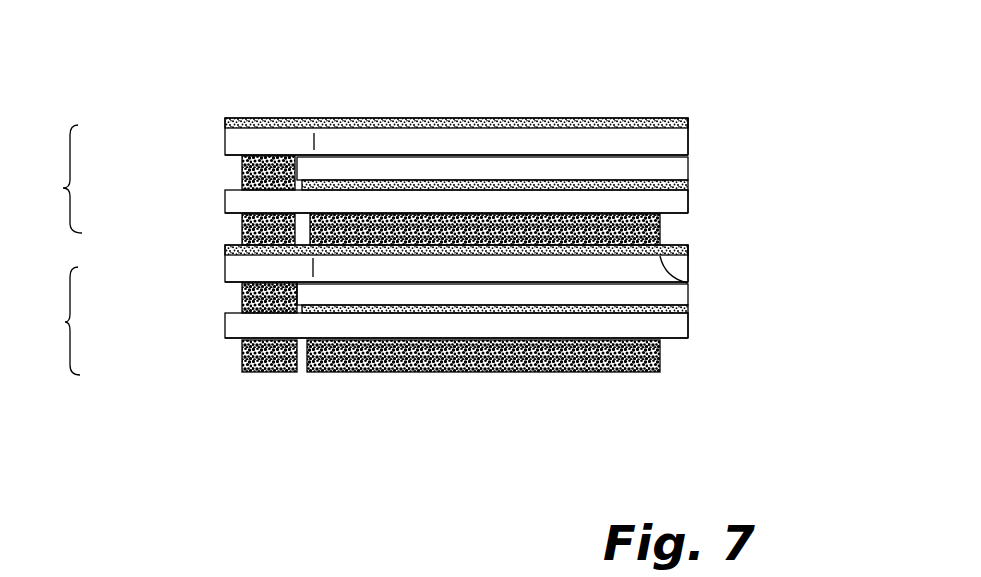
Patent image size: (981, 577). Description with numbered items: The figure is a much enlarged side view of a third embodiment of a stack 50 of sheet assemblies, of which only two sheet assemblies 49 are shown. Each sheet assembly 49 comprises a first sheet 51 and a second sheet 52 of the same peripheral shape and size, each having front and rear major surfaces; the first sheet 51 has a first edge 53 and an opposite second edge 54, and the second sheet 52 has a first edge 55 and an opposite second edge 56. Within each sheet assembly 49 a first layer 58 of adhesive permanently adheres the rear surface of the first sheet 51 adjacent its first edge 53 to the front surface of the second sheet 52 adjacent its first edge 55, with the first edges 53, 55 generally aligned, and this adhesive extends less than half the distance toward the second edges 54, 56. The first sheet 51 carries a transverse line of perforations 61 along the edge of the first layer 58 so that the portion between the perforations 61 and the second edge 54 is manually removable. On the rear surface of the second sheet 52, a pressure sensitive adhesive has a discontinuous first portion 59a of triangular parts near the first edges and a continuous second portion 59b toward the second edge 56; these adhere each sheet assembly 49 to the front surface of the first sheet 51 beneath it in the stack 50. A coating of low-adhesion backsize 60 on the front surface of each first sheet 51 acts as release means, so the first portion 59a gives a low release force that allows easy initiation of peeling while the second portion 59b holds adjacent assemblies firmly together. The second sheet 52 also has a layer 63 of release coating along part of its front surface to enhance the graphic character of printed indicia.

The sheet assembly 49 is at (51, 250).
The stack of sheet assemblies 50 is at (486, 227).
The first sheet 51 is at (556, 112).
The second sheet 52 is at (552, 272).
The first edge of first sheet 53 is at (418, 204).
The second edge of first sheet 54 is at (508, 205).
The first edge of second sheet 55 is at (410, 278).
The second edge of second sheet 56 is at (497, 258).
The first layer of adhesive 58 is at (219, 236).
The first portion of second layer of pressure sensitive adhesive 59a is at (209, 312).
The second portion of second layer of pressure sensitive adhesive 59b is at (551, 311).
The coating of low-adhesion backsize 60 is at (610, 197).
The line of perforations 61 is at (313, 277).
The layer of release coating 63 is at (495, 248).